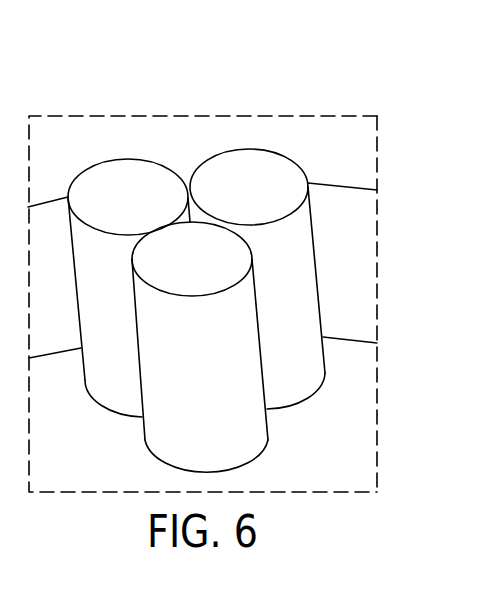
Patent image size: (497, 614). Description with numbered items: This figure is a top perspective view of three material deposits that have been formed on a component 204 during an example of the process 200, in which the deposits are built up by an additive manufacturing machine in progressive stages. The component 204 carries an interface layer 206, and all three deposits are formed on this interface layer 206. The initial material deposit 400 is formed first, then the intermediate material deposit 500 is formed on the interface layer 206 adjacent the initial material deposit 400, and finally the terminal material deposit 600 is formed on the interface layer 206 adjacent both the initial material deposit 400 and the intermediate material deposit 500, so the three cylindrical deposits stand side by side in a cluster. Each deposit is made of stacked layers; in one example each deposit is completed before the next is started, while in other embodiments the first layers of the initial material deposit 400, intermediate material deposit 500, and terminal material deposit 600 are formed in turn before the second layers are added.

The process 200 is at (299, 98).
The component 204 is at (371, 253).
The interface layer 206 is at (360, 402).
The initial material deposit 400 is at (108, 188).
The intermediate material deposit 500 is at (238, 180).
The terminal material deposit 600 is at (181, 247).